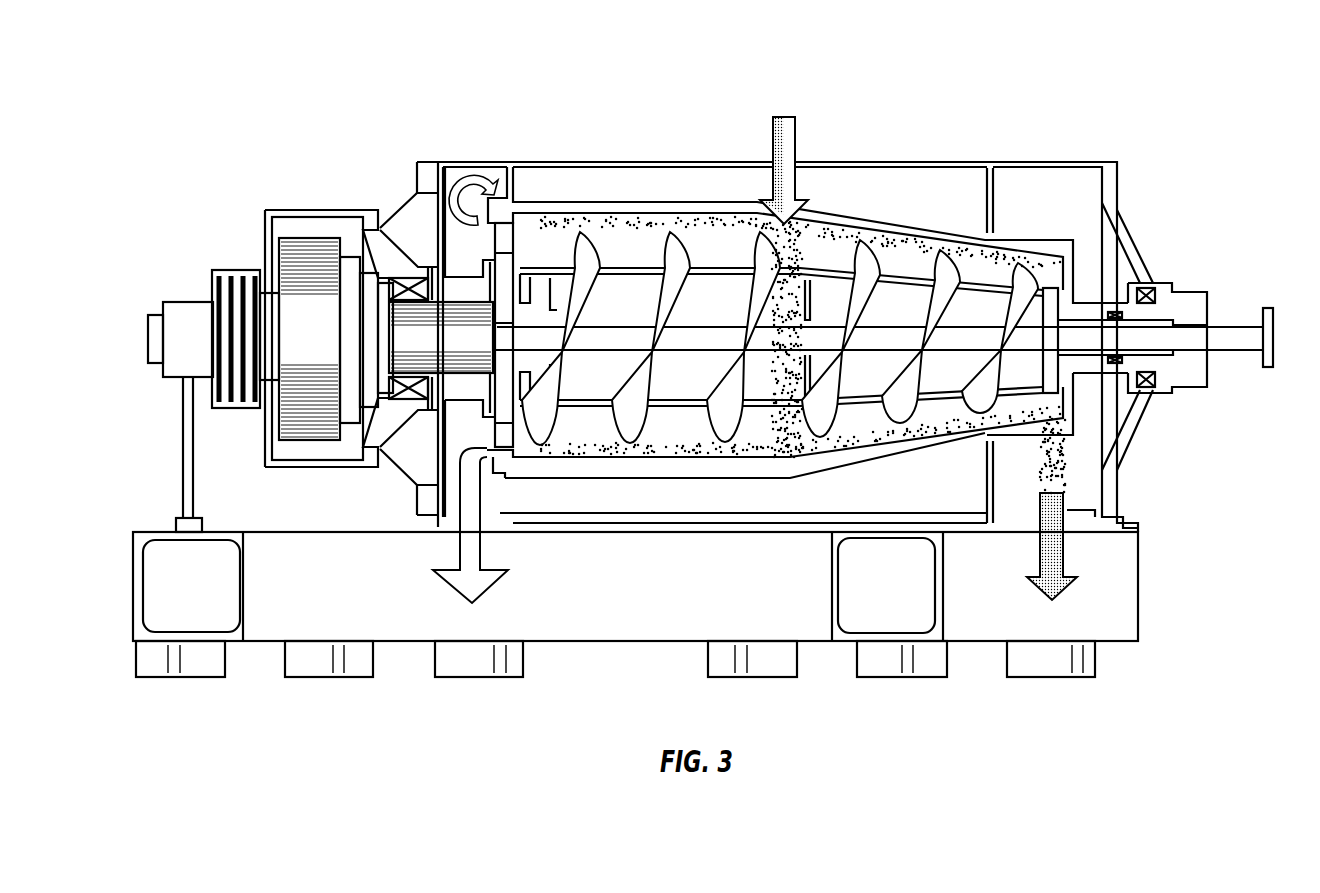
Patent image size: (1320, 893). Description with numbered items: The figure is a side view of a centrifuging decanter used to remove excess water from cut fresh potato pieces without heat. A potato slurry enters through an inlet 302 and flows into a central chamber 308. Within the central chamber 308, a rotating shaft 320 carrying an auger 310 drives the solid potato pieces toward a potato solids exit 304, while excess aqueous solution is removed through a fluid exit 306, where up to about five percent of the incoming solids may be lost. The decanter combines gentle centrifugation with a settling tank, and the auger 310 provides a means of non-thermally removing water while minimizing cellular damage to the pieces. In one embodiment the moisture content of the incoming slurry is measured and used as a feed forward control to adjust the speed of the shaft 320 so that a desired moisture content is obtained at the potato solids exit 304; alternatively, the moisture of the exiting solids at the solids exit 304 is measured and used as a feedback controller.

The inlet 302 is at (788, 128).
The potato solids exit 304 is at (1052, 600).
The fluid exit 306 is at (472, 588).
The central chamber 308 is at (987, 103).
The auger 310 is at (753, 230).
The rotating shaft 320 is at (312, 248).